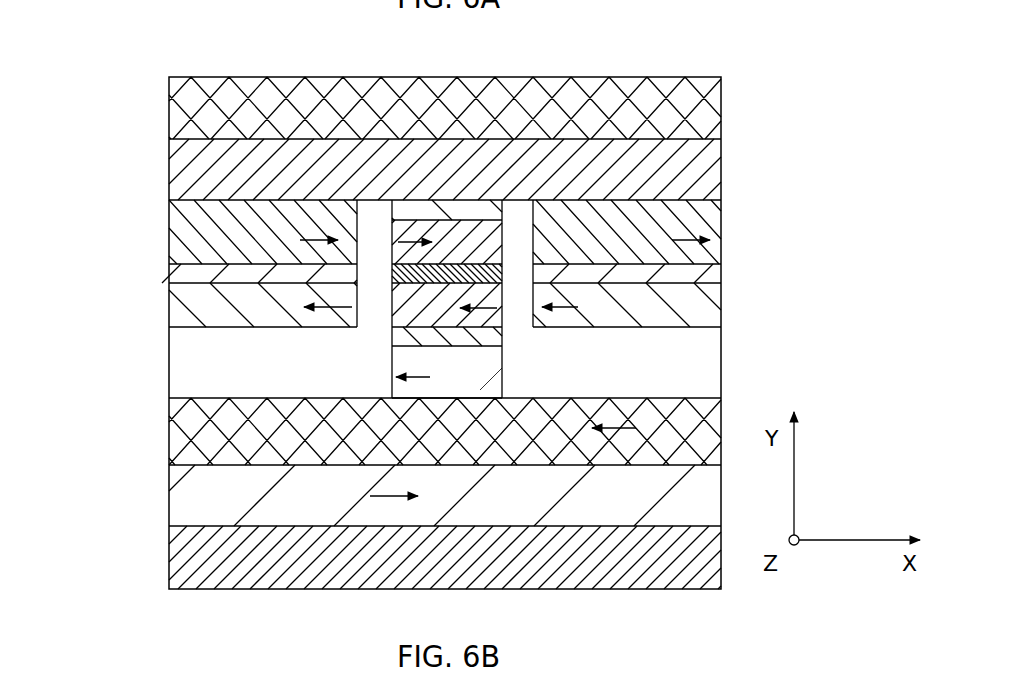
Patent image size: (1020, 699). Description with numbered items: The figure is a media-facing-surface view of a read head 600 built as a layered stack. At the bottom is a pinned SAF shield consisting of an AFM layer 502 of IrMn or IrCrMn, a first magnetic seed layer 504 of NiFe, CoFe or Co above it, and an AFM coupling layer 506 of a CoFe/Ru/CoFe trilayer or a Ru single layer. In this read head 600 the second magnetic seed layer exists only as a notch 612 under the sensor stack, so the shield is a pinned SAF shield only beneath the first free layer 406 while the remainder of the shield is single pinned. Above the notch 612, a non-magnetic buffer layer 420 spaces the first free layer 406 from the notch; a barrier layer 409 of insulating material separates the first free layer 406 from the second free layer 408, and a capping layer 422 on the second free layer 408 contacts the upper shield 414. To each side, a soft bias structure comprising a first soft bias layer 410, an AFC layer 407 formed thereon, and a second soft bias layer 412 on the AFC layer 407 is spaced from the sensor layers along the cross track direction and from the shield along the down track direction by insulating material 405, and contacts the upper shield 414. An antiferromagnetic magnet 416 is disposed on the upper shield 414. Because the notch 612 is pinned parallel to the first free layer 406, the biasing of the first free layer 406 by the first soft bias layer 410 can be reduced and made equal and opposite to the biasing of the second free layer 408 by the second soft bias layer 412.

The read head 600 is at (118, 35).
The antiferromagnetic magnet 416 is at (460, 115).
The upper shield 414 is at (460, 185).
The second soft bias layer 412 is at (280, 248).
The capping layer 422 is at (388, 212).
The second free layer 408 is at (485, 255).
The antiferromagnetically coupled (AFC) layer 407 is at (168, 275).
The barrier layer 409 is at (389, 278).
The insulating material 405 is at (372, 275).
The first soft bias layer 410 is at (279, 316).
The first free layer 406 is at (439, 317).
The non-magnetic buffer layer 420 is at (389, 337).
The notch 612 is at (479, 384).
The AFM coupling (AFC) layer 506 is at (522, 441).
The first magnetic seed layer 504 is at (522, 505).
The AFM layer 502 is at (522, 568).